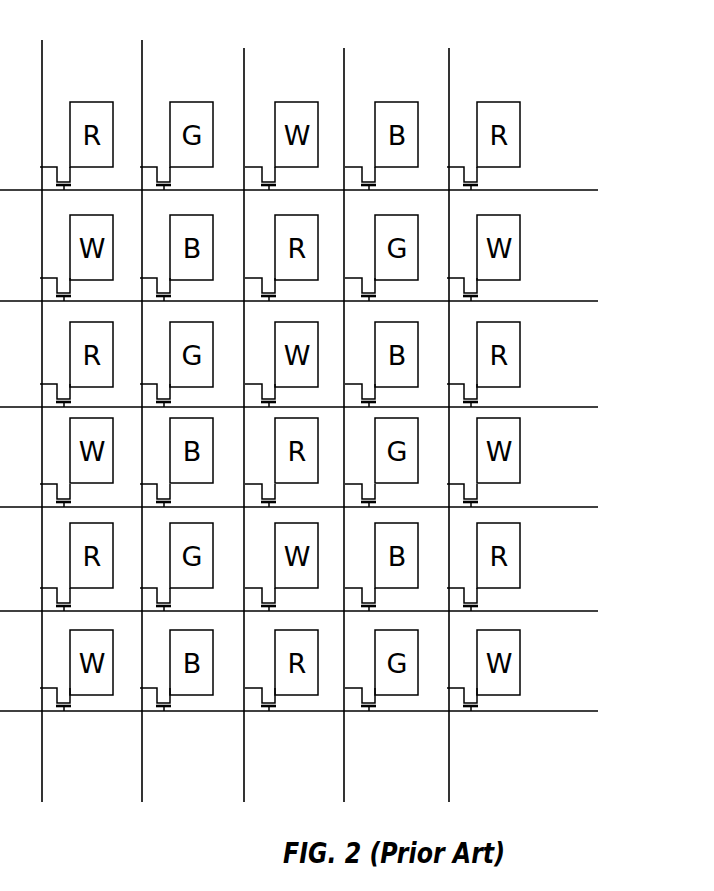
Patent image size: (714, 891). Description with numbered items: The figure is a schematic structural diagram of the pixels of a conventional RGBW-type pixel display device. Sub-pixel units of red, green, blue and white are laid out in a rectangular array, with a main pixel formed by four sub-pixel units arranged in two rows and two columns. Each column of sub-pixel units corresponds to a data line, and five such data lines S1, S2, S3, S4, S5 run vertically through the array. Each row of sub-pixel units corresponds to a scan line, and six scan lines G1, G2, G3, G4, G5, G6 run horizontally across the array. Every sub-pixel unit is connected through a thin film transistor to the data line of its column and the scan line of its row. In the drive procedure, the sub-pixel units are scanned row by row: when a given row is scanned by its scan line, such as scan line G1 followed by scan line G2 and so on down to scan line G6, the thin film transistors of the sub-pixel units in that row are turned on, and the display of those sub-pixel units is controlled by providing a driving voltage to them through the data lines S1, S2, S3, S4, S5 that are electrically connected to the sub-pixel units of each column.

The data line S1 is at (48, 412).
The data line S2 is at (149, 412).
The data line S3 is at (253, 410).
The data line S4 is at (354, 410).
The data line S5 is at (460, 410).
The scan line G1 is at (327, 189).
The scan line G2 is at (328, 300).
The scan line G3 is at (328, 406).
The scan line G4 is at (328, 506).
The scan line G5 is at (328, 610).
The scan line G6 is at (328, 710).